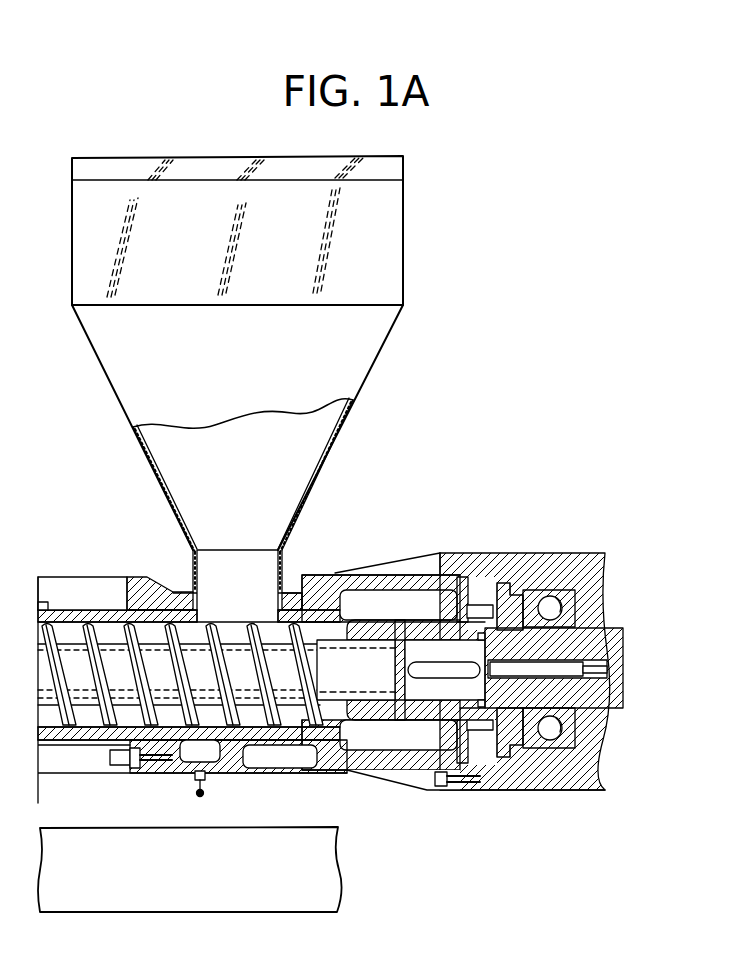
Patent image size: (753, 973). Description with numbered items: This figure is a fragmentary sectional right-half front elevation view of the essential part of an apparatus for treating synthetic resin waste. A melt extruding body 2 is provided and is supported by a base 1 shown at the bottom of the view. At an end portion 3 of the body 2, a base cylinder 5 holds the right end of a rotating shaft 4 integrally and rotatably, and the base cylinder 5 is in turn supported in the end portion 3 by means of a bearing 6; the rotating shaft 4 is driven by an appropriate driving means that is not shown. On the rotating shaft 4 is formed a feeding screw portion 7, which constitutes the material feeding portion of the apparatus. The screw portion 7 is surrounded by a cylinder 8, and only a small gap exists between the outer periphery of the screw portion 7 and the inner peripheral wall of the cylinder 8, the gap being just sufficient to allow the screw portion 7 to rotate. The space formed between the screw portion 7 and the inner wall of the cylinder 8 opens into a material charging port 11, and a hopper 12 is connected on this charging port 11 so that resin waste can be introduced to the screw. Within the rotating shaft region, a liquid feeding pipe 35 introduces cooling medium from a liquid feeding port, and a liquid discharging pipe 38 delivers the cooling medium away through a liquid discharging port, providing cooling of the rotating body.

The base 1 is at (323, 858).
The melt extruding body 2 is at (313, 587).
The end portion 3 is at (482, 556).
The rotating shaft 4 is at (115, 658).
The base cylinder 5 is at (608, 635).
The bearing 6 is at (520, 597).
The feeding screw portion 7 is at (160, 606).
The cylinder 8 is at (77, 610).
The material charging port 11 is at (250, 567).
The hopper 12 is at (393, 201).
The liquid feeding pipe 35 is at (607, 670).
The liquid discharging pipe 38 is at (563, 667).